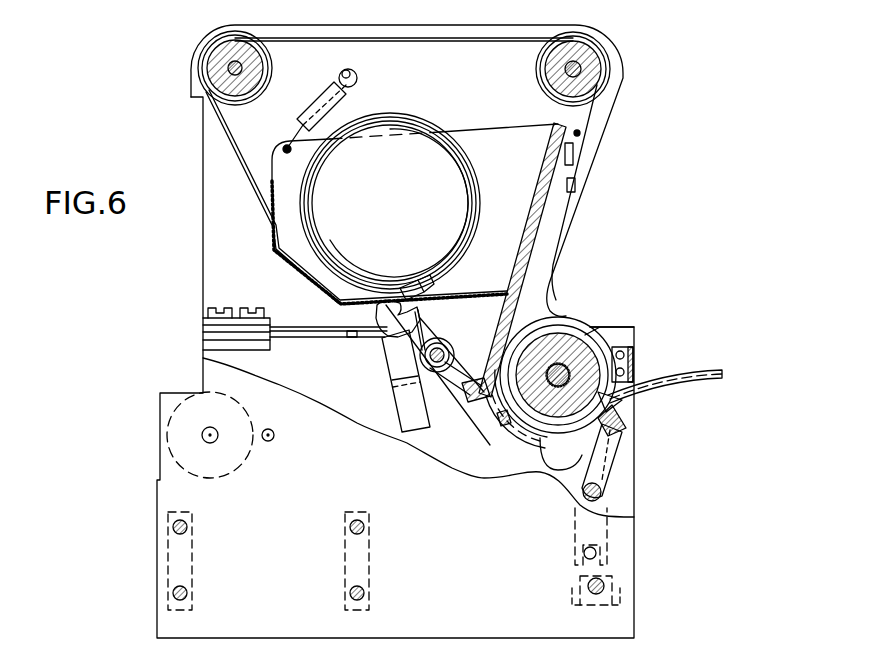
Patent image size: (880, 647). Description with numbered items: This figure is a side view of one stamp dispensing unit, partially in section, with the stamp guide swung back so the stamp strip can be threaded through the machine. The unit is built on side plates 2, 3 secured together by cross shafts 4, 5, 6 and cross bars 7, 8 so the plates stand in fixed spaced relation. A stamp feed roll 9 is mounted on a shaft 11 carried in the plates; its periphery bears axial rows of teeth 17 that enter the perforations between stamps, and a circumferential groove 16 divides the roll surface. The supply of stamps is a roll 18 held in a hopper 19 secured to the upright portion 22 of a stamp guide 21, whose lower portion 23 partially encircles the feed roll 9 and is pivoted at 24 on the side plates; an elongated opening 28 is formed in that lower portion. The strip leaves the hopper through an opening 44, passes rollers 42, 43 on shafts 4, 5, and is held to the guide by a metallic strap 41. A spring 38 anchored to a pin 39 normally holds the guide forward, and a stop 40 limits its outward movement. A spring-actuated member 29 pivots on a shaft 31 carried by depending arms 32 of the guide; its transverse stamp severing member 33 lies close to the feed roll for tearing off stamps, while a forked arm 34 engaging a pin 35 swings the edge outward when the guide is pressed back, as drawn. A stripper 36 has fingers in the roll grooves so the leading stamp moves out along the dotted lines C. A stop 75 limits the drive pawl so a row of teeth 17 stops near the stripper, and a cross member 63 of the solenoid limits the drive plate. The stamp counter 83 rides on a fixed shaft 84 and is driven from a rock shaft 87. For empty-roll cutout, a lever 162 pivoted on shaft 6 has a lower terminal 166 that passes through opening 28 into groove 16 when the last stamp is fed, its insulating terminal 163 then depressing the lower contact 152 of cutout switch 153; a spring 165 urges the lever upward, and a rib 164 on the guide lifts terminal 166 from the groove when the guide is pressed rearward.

The side plate 2 is at (172, 492).
The side plate 3 is at (212, 253).
The cross shaft 4 is at (236, 62).
The cross shaft 5 is at (575, 63).
The cross shaft 6 is at (441, 345).
The cross bar 7 is at (170, 550).
The cross bar 8 is at (620, 592).
The stamp feed roll 9 is at (567, 318).
The shaft 11 is at (568, 362).
The circumferential groove 16 is at (596, 336).
The teeth 17 is at (587, 331).
The roll 18 is at (410, 126).
The hopper 19 is at (482, 132).
The stamp guide 21 is at (537, 237).
The upright portion 22 is at (549, 171).
The lower portion 23 is at (468, 412).
The pivot 24 is at (626, 430).
The elongated opening 28 is at (512, 422).
The spring-actuated member 29 is at (617, 455).
The shaft 31 is at (602, 492).
The depending arms 32 is at (575, 468).
The stamp severing member 33 is at (618, 407).
The forked arm 34 is at (609, 527).
The pin 35 is at (596, 553).
The stripper 36 is at (630, 358).
The spring 38 is at (339, 82).
The pin 39 is at (353, 71).
The stop 40 is at (577, 187).
The metallic strap 41 is at (580, 135).
The roller 42 is at (222, 65).
The roller 43 is at (590, 63).
The opening 44 is at (273, 235).
The cross member 63 is at (370, 562).
The stop 75 is at (404, 399).
The stamp counter 83 is at (198, 392).
The fixed shaft 84 is at (210, 444).
The rock shaft 87 is at (268, 442).
The lower contact 152 is at (332, 340).
The cutout switch 153 is at (303, 328).
The lever 162 is at (472, 412).
The terminal 163 is at (380, 306).
The rib 164 is at (474, 380).
The spring 165 is at (413, 345).
The lower terminal 166 is at (554, 450).
The dotted lines C is at (712, 372).